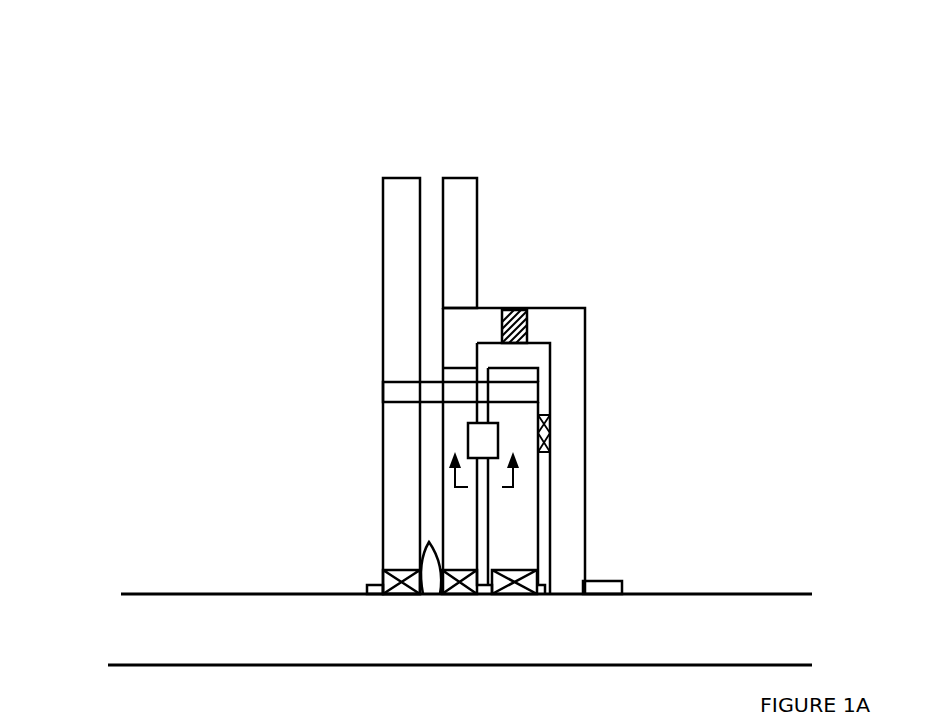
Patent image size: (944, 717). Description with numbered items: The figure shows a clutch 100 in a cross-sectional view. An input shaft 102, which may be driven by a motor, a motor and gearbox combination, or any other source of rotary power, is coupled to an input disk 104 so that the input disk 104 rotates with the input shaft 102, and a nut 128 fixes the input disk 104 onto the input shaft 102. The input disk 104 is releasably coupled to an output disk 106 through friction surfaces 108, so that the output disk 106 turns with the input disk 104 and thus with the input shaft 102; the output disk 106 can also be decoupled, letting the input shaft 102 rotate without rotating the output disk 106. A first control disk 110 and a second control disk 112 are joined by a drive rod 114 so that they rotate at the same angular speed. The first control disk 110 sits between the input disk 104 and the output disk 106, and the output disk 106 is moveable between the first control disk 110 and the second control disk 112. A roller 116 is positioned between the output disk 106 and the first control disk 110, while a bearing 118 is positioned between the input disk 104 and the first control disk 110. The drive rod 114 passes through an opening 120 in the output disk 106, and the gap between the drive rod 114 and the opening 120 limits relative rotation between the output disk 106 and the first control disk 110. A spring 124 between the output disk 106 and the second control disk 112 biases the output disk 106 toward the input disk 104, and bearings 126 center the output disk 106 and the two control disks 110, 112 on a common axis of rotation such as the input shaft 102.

The clutch 100 is at (175, 125).
The input shaft 102 is at (650, 590).
The input disk 104 is at (588, 306).
The output disk 106 is at (480, 176).
The friction surfaces 108 is at (515, 306).
The first control disk 110 is at (545, 487).
The second control disk 112 is at (425, 176).
The drive rod 114 is at (383, 380).
The roller 116 is at (503, 437).
The bearing 118 is at (552, 412).
The opening 120 is at (440, 365).
The spring 124 is at (428, 545).
The bearings 126 is at (375, 570).
The nut 128 is at (684, 508).